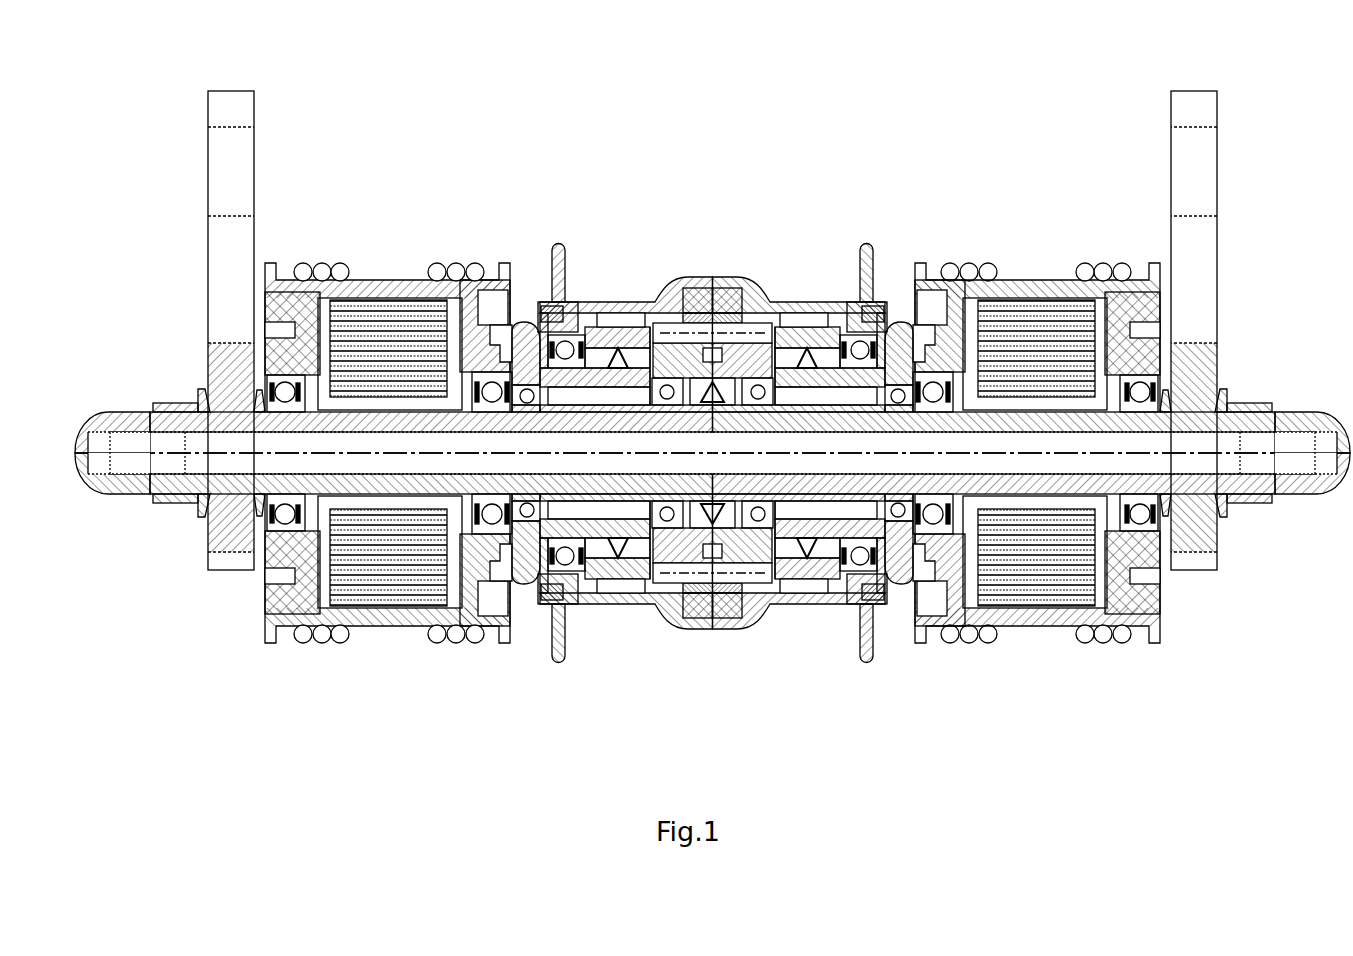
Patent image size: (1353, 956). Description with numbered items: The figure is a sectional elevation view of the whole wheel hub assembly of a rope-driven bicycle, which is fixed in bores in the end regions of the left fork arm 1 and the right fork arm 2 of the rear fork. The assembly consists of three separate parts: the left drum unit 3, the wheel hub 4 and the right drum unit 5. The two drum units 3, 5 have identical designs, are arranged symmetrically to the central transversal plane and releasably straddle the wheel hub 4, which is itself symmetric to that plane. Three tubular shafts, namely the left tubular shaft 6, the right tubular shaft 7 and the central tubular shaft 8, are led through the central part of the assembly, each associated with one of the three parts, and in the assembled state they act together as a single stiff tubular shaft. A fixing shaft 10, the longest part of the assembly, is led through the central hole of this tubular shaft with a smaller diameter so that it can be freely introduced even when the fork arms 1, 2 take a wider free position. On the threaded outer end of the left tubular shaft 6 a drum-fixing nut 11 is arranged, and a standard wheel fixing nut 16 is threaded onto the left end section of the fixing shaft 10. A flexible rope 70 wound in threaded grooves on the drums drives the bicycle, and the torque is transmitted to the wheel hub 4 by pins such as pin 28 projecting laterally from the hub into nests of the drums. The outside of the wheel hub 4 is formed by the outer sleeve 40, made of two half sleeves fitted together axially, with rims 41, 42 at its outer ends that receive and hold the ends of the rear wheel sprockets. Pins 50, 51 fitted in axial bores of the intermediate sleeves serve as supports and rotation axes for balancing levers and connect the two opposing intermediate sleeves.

The left fork arm 1 is at (222, 200).
The right fork arm 2 is at (1203, 190).
The left drum unit 3 is at (392, 248).
The wheel hub 4 is at (708, 170).
The right drum unit 5 is at (1012, 226).
The left tubular shaft 6 is at (185, 485).
The right tubular shaft 7 is at (1250, 487).
The central tubular shaft 8 is at (688, 493).
The fixing shaft 10 is at (1228, 440).
The drum-fixing nut 11 is at (185, 402).
The wheel fixing nut 16 is at (122, 480).
The pin 28 is at (525, 568).
The outer sleeve 40 is at (683, 302).
The rim 41 is at (566, 282).
The rim 42 is at (875, 250).
The pin 50 is at (745, 325).
The pin 51 is at (670, 580).
The rope 70 is at (452, 275).